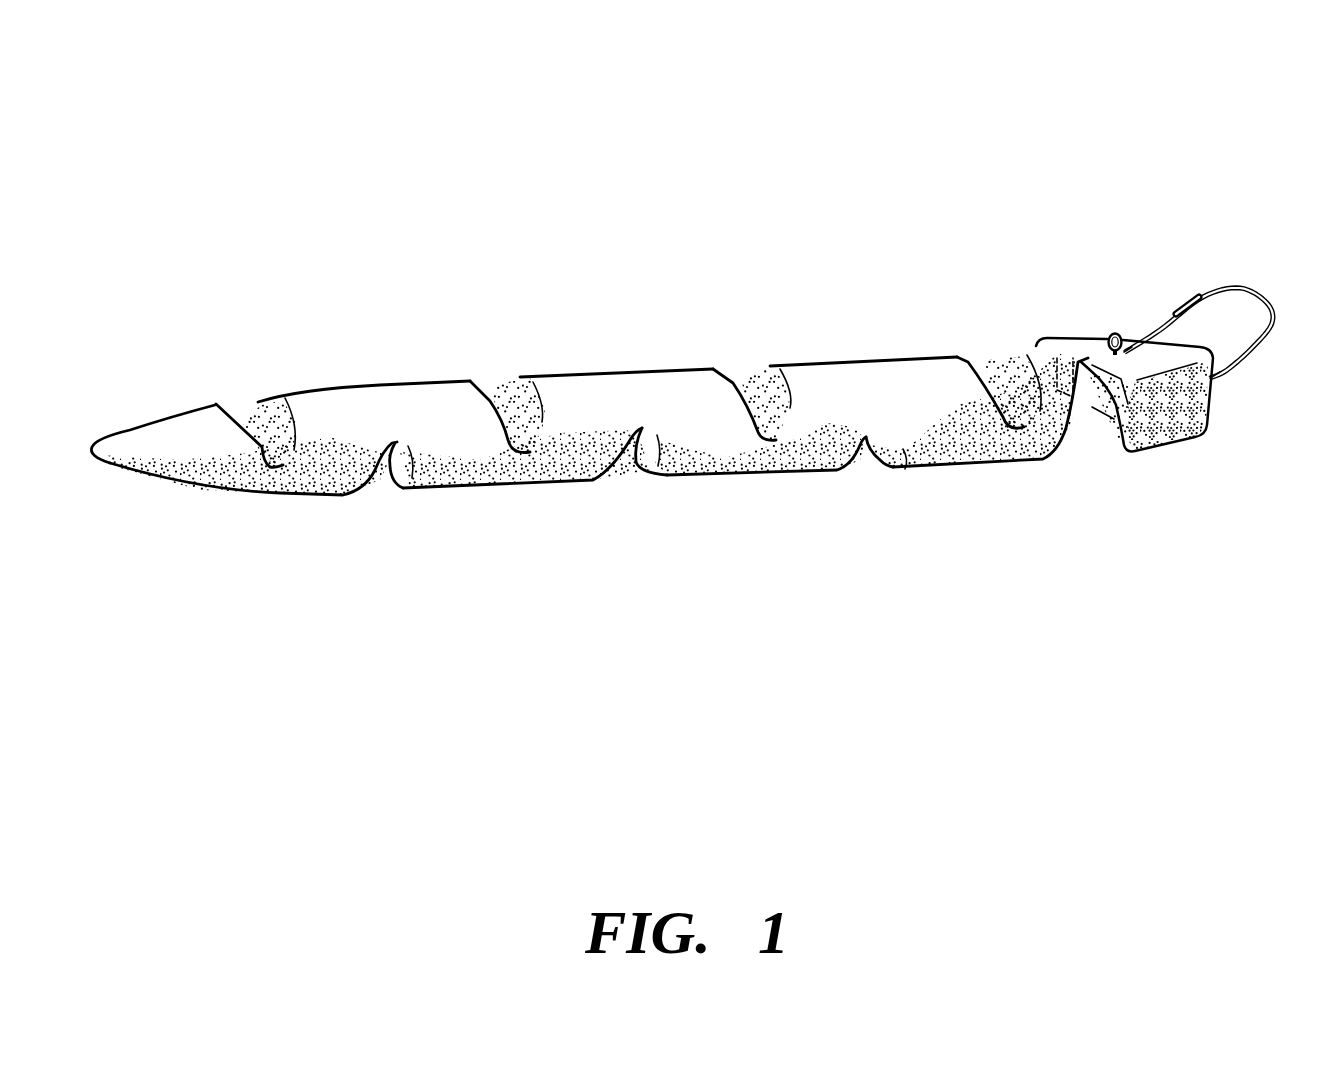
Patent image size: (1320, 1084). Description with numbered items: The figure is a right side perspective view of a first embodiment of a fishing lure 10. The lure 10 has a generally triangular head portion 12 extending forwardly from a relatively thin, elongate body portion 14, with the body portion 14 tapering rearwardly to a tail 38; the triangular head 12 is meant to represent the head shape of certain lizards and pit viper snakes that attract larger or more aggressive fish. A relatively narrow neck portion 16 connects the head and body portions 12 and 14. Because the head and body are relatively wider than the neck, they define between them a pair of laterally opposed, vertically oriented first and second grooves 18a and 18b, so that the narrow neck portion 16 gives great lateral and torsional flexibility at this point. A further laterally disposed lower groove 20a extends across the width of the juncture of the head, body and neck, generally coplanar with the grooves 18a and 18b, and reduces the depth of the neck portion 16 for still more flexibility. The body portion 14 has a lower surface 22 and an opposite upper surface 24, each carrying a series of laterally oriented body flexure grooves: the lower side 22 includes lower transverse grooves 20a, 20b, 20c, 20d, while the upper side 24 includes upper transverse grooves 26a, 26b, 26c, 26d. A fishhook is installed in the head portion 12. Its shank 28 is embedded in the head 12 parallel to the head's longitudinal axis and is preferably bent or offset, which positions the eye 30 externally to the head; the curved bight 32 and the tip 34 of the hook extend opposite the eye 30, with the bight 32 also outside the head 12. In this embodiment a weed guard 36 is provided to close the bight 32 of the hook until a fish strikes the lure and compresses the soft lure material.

The fishing lure 10 is at (305, 158).
The head portion 12 is at (1190, 442).
The body portion 14 is at (583, 387).
The neck portion 16 is at (1043, 348).
The first groove 18a is at (1058, 356).
The second groove 18b is at (1112, 396).
The lower groove 20a is at (1090, 437).
The lower transverse groove 20b is at (888, 457).
The lower transverse groove 20c is at (637, 466).
The lower transverse groove 20d is at (393, 487).
The lower surface 22 is at (745, 466).
The upper surface 24 is at (826, 386).
The upper transverse groove 26a is at (1003, 372).
The upper transverse groove 26b is at (757, 375).
The upper transverse groove 26c is at (504, 388).
The upper transverse groove 26d is at (258, 405).
The shank 28 is at (1218, 368).
The eye 30 is at (1109, 332).
The bight 32 is at (1258, 297).
The tip 34 is at (1180, 312).
The weed guard 36 is at (1127, 350).
The tail 38 is at (180, 477).